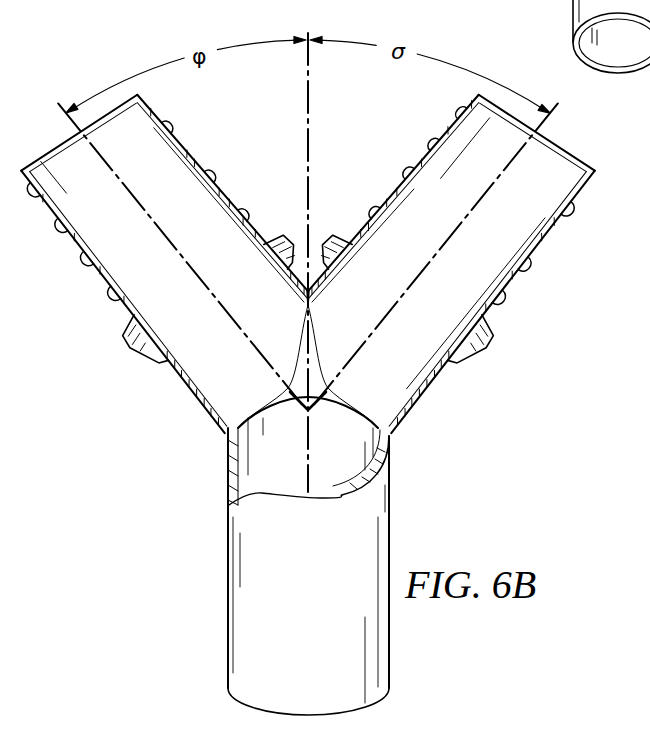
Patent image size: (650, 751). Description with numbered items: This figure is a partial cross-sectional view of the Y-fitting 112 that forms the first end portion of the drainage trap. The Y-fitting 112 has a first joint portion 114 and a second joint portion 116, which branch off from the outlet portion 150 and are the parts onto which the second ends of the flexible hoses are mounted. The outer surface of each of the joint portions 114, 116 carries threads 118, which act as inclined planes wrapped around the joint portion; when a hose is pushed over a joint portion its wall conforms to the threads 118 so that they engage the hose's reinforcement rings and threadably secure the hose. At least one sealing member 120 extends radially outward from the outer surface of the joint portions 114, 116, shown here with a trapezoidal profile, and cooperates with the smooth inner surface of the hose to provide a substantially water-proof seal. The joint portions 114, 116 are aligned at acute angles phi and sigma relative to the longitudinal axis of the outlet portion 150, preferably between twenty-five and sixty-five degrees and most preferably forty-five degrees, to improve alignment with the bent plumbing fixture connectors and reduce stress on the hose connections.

The Y-fitting 112 is at (227, 592).
The first joint portion 114 is at (103, 362).
The second joint portion 116 is at (535, 366).
The threads 118 is at (174, 123).
The sealing member 120 is at (214, 172).
The outlet portion 150 is at (368, 633).